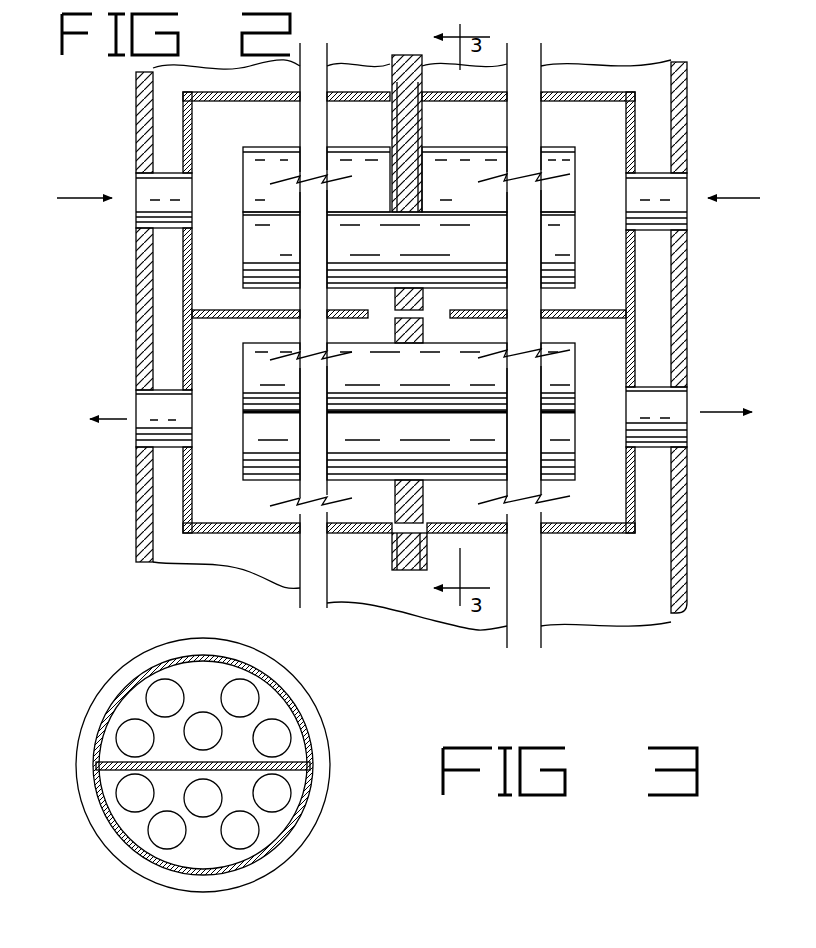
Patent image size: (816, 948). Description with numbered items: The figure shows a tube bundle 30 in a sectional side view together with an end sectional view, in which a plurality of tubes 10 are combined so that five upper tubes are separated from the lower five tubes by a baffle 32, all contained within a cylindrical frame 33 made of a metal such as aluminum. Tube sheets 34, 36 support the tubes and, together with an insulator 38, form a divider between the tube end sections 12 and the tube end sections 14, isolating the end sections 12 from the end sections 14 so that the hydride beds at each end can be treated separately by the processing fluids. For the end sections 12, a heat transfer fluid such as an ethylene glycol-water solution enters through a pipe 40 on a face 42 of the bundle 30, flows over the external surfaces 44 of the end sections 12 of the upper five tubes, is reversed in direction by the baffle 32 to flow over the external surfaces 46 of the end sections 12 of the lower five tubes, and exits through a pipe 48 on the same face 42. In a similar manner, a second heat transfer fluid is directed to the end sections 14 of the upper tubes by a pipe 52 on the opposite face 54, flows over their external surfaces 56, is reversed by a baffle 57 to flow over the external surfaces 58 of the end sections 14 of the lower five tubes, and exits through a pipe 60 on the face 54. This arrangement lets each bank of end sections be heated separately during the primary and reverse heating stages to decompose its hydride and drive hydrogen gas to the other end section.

In FIG. 3, the tube 10 is at (240, 699).
In FIG. 2, the tube end section 12 is at (258, 168).
In FIG. 2, the tube end section 14 is at (565, 160).
In FIG. 2, the tube bundle 30 is at (548, 88).
In FIG. 3, the tube bundle 30 is at (325, 822).
In FIG. 2, the baffle 32 is at (234, 310).
In FIG. 2, the cylindrical frame 33 is at (595, 533).
In FIG. 3, the cylindrical frame 33 is at (293, 706).
In FIG. 2, the tube sheet 34 is at (392, 556).
In FIG. 2, the tube sheet 36 is at (427, 560).
In FIG. 3, the tube sheet 36 is at (146, 664).
In FIG. 2, the insulator 38 is at (395, 500).
In FIG. 2, the pipe 40 is at (148, 188).
In FIG. 2, the face 42 is at (136, 262).
In FIG. 2, the external surfaces 44 is at (365, 205).
In FIG. 2, the external surfaces 46 is at (278, 485).
In FIG. 2, the pipe 48 is at (140, 404).
In FIG. 2, the pipe 52 is at (678, 190).
In FIG. 2, the face 54 is at (680, 300).
In FIG. 2, the external surfaces 56 is at (460, 212).
In FIG. 3, the external surfaces 56 is at (130, 722).
In FIG. 2, the baffle 57 is at (580, 310).
In FIG. 3, the baffle 57 is at (292, 764).
In FIG. 2, the external surfaces 58 is at (560, 488).
In FIG. 3, the external surfaces 58 is at (148, 840).
In FIG. 2, the pipe 60 is at (678, 404).